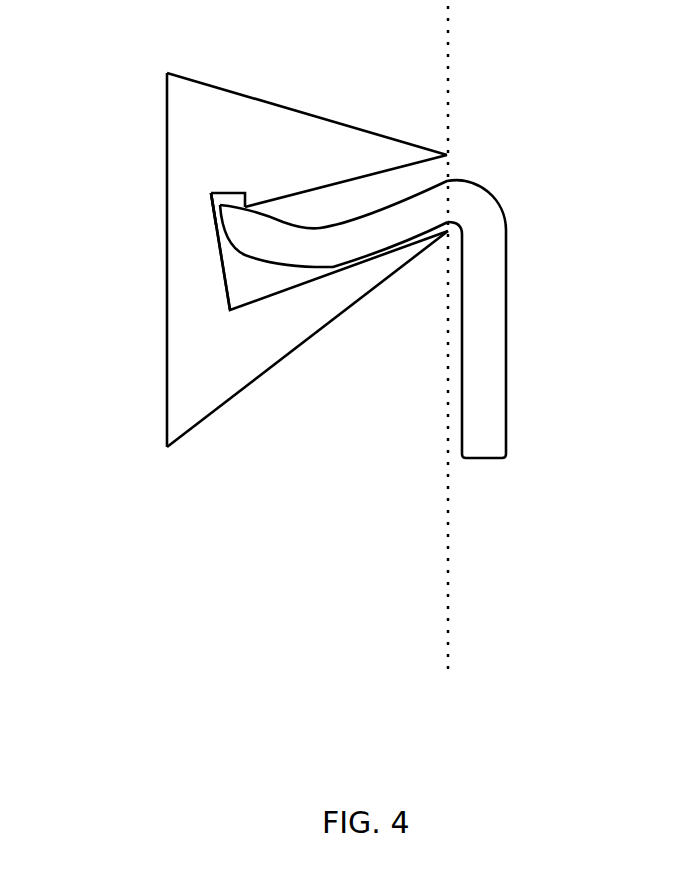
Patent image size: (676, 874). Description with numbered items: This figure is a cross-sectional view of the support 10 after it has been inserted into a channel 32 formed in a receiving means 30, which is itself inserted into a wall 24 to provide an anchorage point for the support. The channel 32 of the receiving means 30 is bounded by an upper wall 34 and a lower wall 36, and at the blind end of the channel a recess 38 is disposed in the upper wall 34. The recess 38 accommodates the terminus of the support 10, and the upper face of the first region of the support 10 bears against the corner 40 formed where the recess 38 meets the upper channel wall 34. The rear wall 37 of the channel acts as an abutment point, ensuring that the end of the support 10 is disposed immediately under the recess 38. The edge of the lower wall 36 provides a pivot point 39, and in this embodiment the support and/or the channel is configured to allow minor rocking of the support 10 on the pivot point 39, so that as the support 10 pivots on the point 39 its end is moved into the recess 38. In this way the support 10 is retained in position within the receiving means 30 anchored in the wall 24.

The support 10 is at (482, 190).
The wall 24 is at (447, 640).
The receiving means 30 is at (165, 117).
The channel 32 is at (221, 258).
The upper wall 34 is at (327, 184).
The lower wall 36 is at (250, 312).
The rear wall 37 is at (218, 232).
The recess 38 is at (218, 192).
The pivot point 39 is at (338, 270).
The corner 40 is at (245, 205).